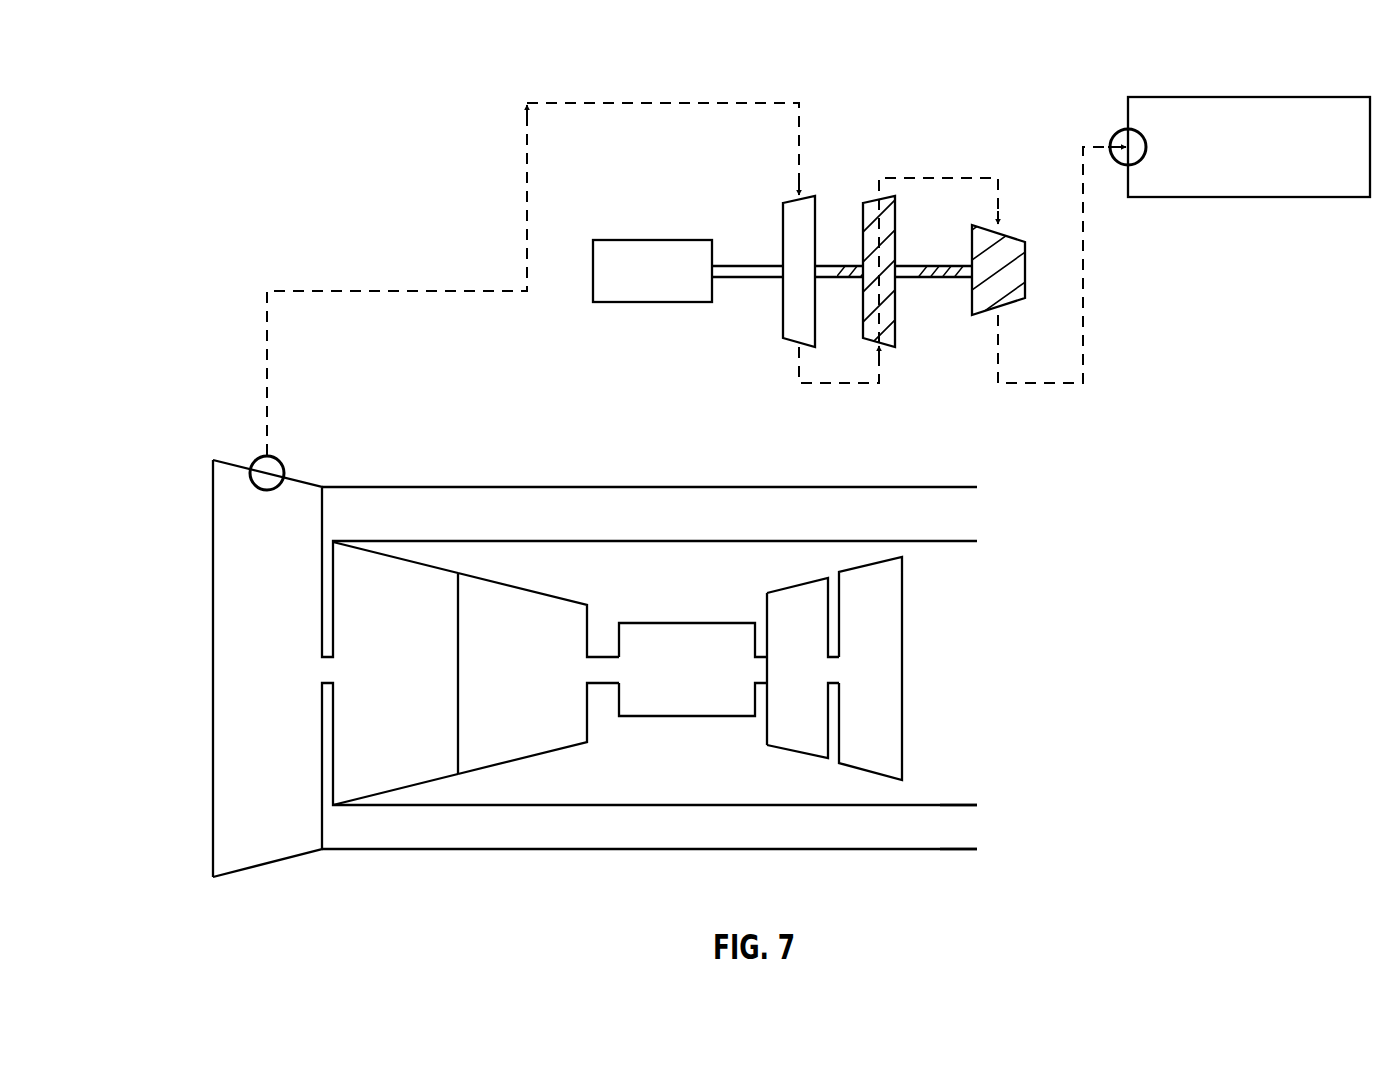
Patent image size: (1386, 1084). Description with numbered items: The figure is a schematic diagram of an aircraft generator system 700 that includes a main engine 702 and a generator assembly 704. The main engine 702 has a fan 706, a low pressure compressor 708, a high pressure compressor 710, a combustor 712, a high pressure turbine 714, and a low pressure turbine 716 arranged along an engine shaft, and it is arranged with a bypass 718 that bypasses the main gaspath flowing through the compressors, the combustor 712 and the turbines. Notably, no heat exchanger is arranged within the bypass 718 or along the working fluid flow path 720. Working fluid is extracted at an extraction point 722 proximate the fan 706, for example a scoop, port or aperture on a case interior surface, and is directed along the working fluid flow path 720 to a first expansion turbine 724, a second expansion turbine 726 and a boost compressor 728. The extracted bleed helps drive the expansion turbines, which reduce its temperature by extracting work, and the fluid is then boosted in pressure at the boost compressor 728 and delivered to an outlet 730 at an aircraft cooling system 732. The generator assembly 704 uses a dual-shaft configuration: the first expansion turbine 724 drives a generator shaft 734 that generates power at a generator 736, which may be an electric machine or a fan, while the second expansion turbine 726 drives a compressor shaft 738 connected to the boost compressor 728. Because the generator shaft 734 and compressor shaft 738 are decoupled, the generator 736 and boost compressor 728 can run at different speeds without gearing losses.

The aircraft generator system 700 is at (177, 82).
The main engine 702 is at (200, 635).
The generator assembly 704 is at (650, 234).
The fan 706 is at (262, 838).
The low pressure compressor 708 is at (378, 755).
The high pressure compressor 710 is at (497, 732).
The combustor 712 is at (670, 695).
The high pressure turbine 714 is at (795, 732).
The low pressure turbine 716 is at (876, 750).
The bypass 718 is at (947, 823).
The working fluid flow path 720 is at (418, 291).
The extraction point 722 is at (259, 466).
The first expansion turbine 724 is at (807, 207).
The second expansion turbine 726 is at (888, 328).
The boost compressor 728 is at (1007, 247).
The outlet 730 is at (1127, 128).
The aircraft cooling system 732 is at (1262, 117).
The generator shaft 734 is at (765, 270).
The generator 736 is at (650, 280).
The compressor shaft 738 is at (913, 263).